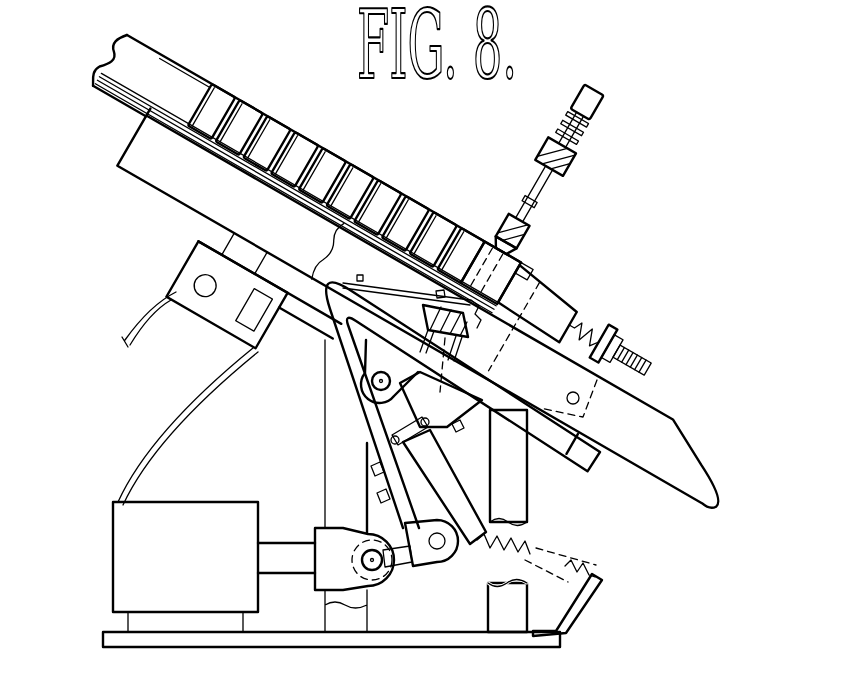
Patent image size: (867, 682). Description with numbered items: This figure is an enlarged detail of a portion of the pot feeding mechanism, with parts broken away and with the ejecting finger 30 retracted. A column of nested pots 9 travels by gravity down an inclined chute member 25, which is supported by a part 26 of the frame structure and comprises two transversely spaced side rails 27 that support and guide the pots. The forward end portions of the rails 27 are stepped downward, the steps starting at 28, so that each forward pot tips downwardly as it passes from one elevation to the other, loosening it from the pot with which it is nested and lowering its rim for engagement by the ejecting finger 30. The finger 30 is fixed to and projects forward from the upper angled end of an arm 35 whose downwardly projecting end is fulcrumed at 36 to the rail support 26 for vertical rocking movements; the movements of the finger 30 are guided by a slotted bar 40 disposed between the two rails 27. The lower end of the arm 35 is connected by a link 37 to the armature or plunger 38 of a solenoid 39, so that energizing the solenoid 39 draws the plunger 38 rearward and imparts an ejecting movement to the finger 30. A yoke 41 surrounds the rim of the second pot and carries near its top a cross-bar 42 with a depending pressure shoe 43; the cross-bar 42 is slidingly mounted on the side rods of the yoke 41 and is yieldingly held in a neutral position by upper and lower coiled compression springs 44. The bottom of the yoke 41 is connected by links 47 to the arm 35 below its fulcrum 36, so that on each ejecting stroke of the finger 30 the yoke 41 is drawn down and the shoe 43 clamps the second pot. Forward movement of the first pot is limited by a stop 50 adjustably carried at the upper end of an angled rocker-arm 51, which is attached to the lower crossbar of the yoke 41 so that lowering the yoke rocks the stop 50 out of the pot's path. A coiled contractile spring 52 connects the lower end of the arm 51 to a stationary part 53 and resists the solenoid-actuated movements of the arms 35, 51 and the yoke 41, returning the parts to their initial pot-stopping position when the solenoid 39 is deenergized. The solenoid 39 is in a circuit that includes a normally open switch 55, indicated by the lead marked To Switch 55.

The nested pots 9 is at (328, 165).
The inclined chute member 25 is at (170, 203).
The rail support 26 is at (197, 243).
The side rails 27 is at (150, 108).
The steps 28 is at (478, 303).
The ejecting finger 30 is at (408, 281).
The arm 35 is at (348, 363).
The fulcrum 36 is at (374, 386).
The link 37 is at (398, 568).
The armature or plunger 38 is at (297, 528).
The solenoid 39 is at (186, 557).
The slotted bar 40 is at (423, 308).
The yoke 41 is at (440, 397).
The cross-bar 42 is at (563, 168).
The pressure shoe 43 is at (527, 238).
The coiled compression springs 44 is at (577, 127).
The links 47 is at (438, 447).
The stop 50 is at (582, 320).
The angled rocker-arm 51 is at (612, 378).
The coiled contractile spring 52 is at (573, 557).
The stationary part 53 is at (580, 613).
The switch 55 is at (142, 331).